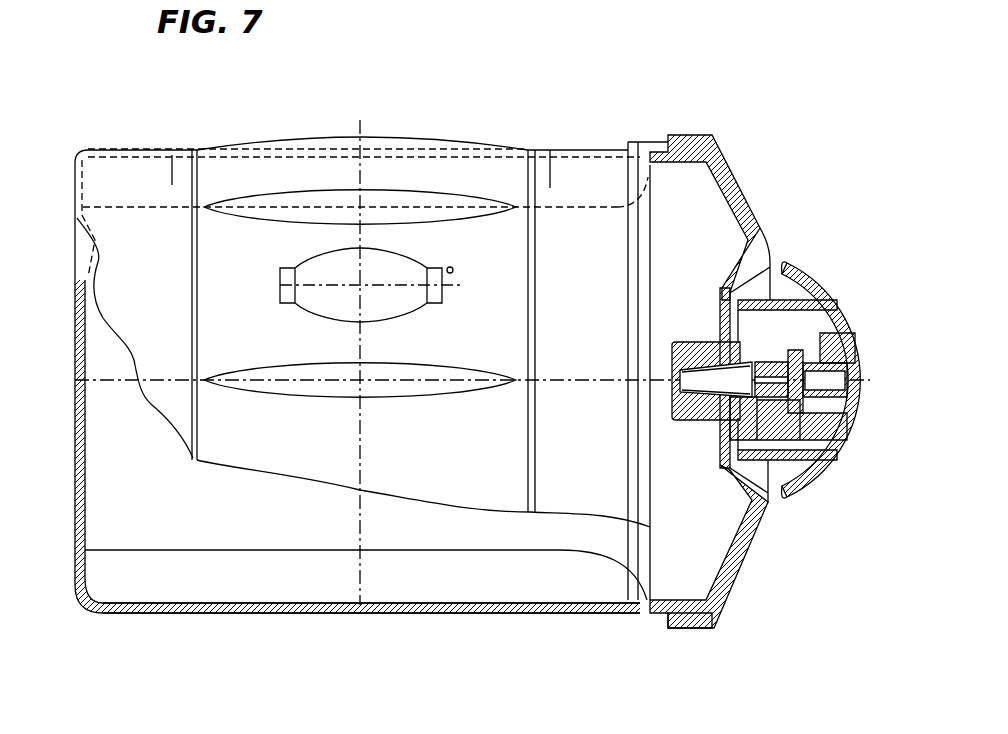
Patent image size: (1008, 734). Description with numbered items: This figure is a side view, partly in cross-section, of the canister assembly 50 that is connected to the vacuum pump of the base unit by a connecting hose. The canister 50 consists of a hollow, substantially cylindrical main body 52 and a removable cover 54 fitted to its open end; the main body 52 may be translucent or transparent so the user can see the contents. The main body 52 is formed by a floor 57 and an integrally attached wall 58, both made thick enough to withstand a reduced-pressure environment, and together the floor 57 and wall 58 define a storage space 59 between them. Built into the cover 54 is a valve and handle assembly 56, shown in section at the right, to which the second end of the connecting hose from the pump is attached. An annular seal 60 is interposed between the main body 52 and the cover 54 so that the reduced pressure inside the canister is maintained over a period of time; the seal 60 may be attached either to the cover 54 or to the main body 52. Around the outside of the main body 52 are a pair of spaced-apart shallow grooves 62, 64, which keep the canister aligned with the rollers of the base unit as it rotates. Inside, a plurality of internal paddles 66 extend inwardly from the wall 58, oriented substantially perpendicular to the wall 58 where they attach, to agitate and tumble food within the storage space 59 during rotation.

The canister 50 is at (523, 128).
The main body 52 is at (337, 125).
The removable cover 54 is at (762, 557).
The valve and handle assembly 56 is at (835, 271).
The floor 57 is at (92, 463).
The wall 58 is at (410, 617).
The storage space 59 is at (148, 530).
The annular seal 60 is at (680, 628).
The shallow groove 62 is at (183, 199).
The shallow groove 64 is at (594, 188).
The internal paddles 66 is at (252, 592).